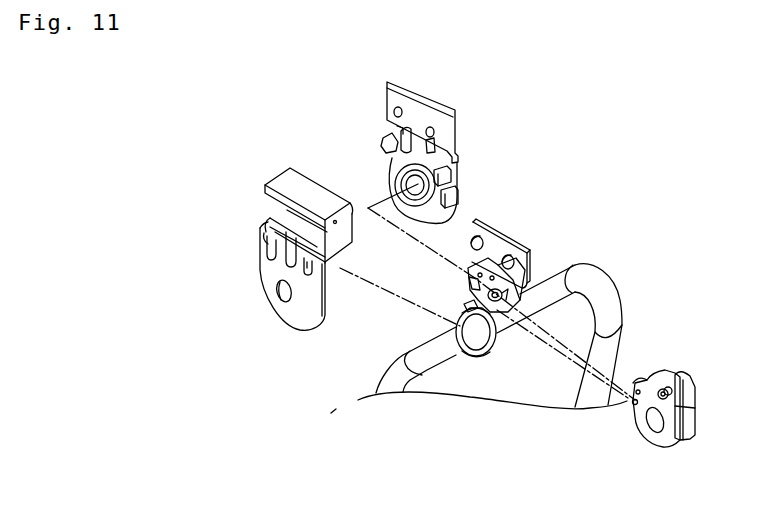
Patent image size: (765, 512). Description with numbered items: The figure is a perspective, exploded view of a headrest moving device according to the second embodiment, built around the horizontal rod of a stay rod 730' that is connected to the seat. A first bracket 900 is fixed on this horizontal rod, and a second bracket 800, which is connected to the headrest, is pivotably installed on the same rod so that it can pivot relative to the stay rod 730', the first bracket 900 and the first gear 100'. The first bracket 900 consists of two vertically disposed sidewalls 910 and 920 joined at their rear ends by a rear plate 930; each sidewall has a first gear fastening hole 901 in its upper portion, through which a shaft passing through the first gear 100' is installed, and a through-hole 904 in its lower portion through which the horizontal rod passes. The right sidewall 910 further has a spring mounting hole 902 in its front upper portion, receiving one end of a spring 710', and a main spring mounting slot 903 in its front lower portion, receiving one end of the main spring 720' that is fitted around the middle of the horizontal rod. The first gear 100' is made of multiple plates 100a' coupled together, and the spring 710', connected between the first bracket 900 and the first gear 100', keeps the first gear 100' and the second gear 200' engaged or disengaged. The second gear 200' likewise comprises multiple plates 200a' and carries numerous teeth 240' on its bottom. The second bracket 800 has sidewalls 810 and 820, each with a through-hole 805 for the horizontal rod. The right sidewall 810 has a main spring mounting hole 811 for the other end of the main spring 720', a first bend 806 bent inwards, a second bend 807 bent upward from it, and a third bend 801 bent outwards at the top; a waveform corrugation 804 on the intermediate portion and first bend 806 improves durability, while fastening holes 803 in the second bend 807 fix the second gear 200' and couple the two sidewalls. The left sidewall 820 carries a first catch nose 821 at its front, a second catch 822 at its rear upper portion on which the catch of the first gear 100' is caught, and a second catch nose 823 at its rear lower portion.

The second bracket 800 is at (332, 103).
The third bend 801 is at (280, 180).
The fastening holes 803 is at (336, 223).
The corrugation 804 is at (272, 248).
The through-hole 805 is at (286, 295).
The first bend 806 is at (280, 213).
The second bend 807 is at (350, 219).
The sidewall 810 is at (319, 176).
The main spring mounting hole 811 is at (311, 267).
The sidewall 820 is at (379, 105).
The first catch nose 821 is at (383, 147).
The second catch 822 is at (451, 170).
The second catch nose 823 is at (459, 192).
The second gear 200' is at (523, 250).
The plates 200a' is at (501, 238).
The teeth 240' is at (532, 264).
The first gear 100' is at (471, 271).
The spring 710' is at (451, 281).
The plates 100a' is at (448, 301).
The main spring 720' is at (496, 341).
The stay rod 730' is at (499, 335).
The first bracket 900 is at (699, 385).
The first gear fastening hole 901 is at (667, 389).
The spring mounting hole 902 is at (638, 380).
The main spring mounting slot 903 is at (634, 403).
The through-hole 904 is at (657, 418).
The sidewall 910 is at (662, 445).
The sidewall 920 is at (692, 438).
The rear plate 930 is at (692, 418).